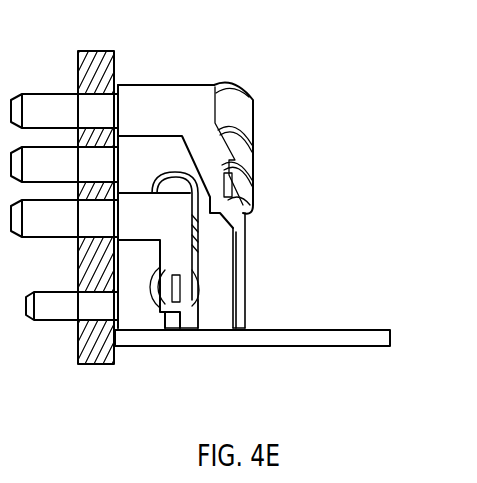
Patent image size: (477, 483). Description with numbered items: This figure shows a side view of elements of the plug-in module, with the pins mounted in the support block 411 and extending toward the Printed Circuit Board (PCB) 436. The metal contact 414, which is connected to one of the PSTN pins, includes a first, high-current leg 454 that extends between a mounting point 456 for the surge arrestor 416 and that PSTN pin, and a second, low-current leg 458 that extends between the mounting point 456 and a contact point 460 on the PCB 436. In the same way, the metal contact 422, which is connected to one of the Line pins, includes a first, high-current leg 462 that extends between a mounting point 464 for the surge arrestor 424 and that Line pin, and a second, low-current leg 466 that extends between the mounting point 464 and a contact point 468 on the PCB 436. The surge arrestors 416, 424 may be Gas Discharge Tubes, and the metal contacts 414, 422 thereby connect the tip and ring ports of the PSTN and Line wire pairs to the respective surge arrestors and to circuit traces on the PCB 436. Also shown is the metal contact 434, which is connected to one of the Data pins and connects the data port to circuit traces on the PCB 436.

The support block 411 is at (92, 50).
The first (high-current) leg 454 is at (167, 83).
The metal contact 414 is at (205, 122).
The surge arrestor 416 is at (247, 118).
The first (high-current) leg 462 is at (143, 190).
The metal contact 422 is at (175, 232).
The mounting point 456 is at (233, 194).
The second (low-current) leg 458 is at (247, 262).
The contact point 460 is at (248, 325).
The Printed Circuit Board (PCB) 436 is at (311, 330).
The mounting point 464 is at (181, 291).
The surge arrestor 424 is at (160, 267).
The second (low-current) leg 466 is at (195, 314).
The contact point 468 is at (188, 333).
The metal contact 434 is at (119, 290).